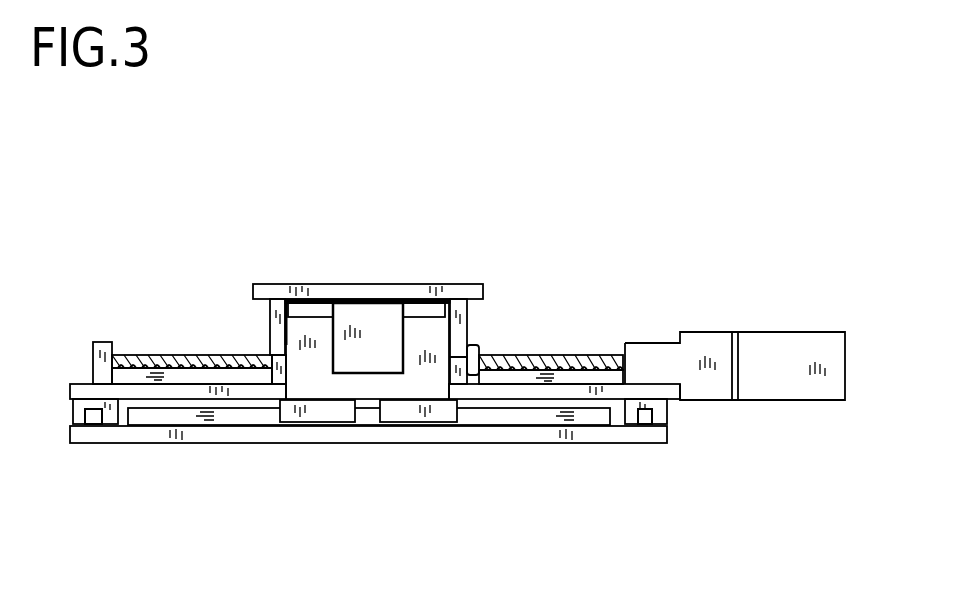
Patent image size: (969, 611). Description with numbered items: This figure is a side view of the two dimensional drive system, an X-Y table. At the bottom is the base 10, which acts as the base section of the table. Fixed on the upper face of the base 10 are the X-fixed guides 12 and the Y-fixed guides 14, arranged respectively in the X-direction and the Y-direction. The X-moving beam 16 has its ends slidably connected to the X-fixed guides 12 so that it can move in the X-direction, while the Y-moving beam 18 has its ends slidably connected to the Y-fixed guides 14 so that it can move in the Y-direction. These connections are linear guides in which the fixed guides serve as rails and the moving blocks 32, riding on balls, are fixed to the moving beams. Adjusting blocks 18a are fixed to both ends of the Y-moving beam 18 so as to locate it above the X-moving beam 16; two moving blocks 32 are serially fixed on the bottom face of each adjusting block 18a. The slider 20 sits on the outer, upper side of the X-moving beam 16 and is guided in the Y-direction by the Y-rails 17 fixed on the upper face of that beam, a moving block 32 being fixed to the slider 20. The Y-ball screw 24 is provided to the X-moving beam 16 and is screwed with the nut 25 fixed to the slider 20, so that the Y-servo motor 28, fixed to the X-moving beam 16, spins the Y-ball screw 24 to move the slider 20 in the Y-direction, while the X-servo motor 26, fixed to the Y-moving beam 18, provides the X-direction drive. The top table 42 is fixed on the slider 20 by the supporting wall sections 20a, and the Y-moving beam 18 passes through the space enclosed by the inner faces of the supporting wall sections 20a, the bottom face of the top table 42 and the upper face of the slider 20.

The base 10 is at (201, 437).
The X-fixed guides 12 is at (92, 415).
The Y-fixed guides 14 is at (512, 424).
The X-moving beam 16 is at (175, 389).
The Y-rails 17 is at (198, 369).
The Y-moving beam 18 is at (372, 354).
The adjusting blocks 18a is at (348, 388).
The slider 20 is at (356, 276).
The supporting wall sections 20a is at (281, 351).
The Y-ball screw 24 is at (575, 372).
The nut 25 is at (468, 374).
The X-servo motor 26 is at (377, 328).
The Y-servo motor 28 is at (782, 352).
The moving block 32 is at (515, 353).
The top table 42 is at (358, 290).